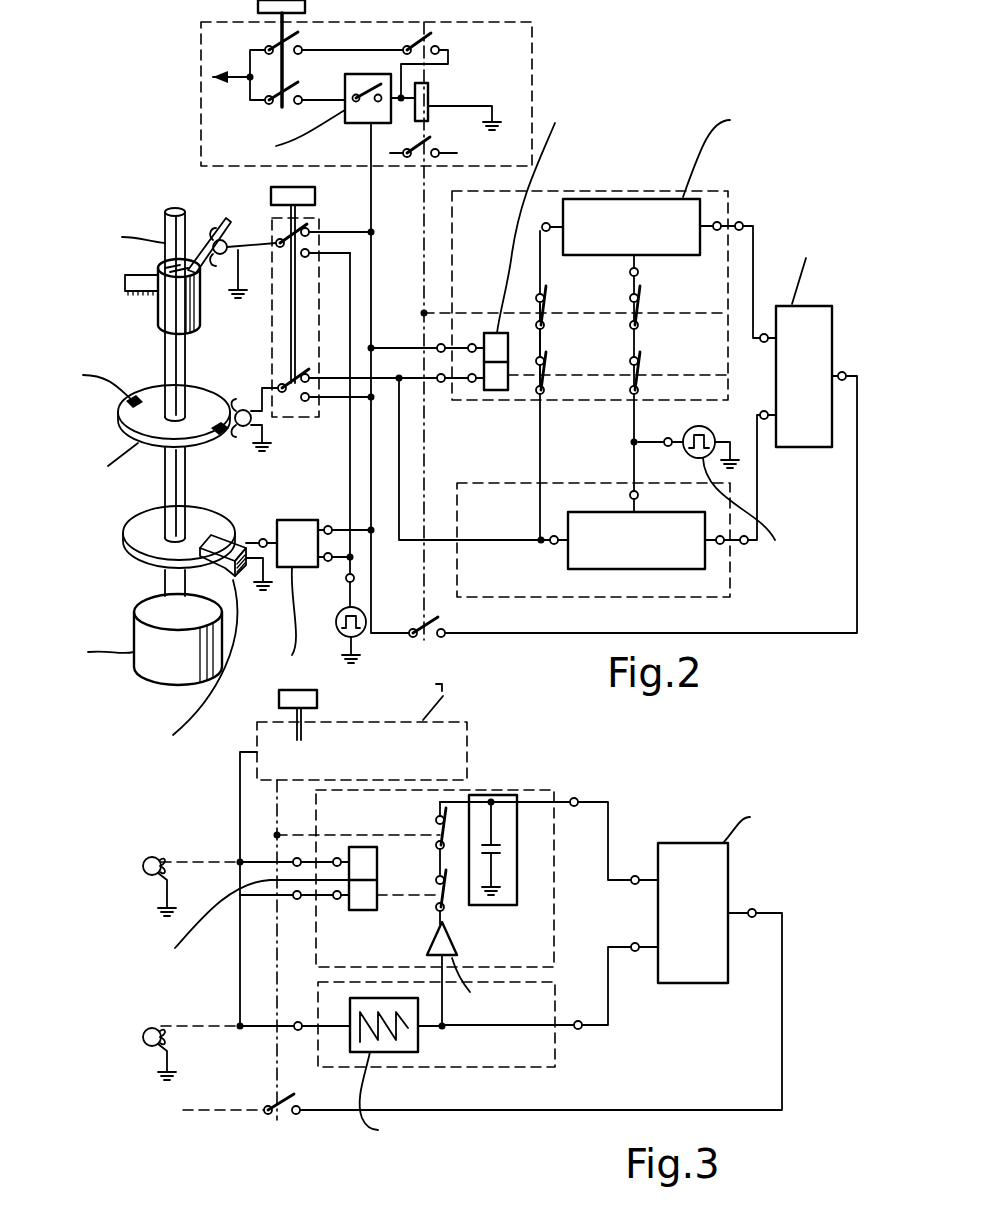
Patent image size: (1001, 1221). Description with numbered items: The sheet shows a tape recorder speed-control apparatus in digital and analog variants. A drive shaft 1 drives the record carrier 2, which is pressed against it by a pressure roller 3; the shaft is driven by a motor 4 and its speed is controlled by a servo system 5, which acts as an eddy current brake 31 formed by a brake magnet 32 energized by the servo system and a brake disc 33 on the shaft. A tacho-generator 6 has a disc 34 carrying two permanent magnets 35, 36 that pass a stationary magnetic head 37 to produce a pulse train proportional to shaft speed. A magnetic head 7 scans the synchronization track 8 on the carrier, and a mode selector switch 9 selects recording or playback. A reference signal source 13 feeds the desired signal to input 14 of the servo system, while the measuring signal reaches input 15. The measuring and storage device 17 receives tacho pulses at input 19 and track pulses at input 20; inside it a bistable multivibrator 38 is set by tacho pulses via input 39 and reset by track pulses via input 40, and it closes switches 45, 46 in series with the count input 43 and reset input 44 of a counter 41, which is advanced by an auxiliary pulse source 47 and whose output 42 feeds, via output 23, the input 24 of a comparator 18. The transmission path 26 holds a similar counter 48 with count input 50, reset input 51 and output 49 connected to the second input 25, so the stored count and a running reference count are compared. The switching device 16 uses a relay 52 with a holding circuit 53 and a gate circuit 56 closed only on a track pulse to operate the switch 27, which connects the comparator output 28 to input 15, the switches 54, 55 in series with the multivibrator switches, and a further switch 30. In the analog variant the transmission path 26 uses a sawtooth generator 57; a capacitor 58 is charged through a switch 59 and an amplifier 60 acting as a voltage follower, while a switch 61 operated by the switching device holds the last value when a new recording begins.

In FIG. 2, the drive shaft 1 is at (168, 242).
In FIG. 2, the record carrier 2 is at (208, 232).
In FIG. 2, the pressure roller 3 is at (201, 305).
In FIG. 2, the motor 4 is at (163, 673).
In FIG. 2, the servo system 5 is at (300, 568).
In FIG. 2, the tacho-generator 6 is at (137, 457).
In FIG. 2, the magnetic head 7 is at (226, 251).
In FIG. 3, the magnetic head 7 is at (160, 857).
In FIG. 2, the synchronization track 8 is at (146, 293).
In FIG. 2, the mode selector switch 9 is at (262, 224).
In FIG. 2, the reference signal source 13 is at (362, 634).
In FIG. 2, the servo system input 14 is at (329, 562).
In FIG. 2, the servo system input 15 is at (329, 525).
In FIG. 2, the switching device 16 is at (540, 52).
In FIG. 3, the switching device 16 is at (480, 743).
In FIG. 2, the measuring and storage device 17 is at (679, 178).
In FIG. 3, the measuring and storage device 17 is at (545, 770).
In FIG. 2, the comparator 18 is at (805, 306).
In FIG. 3, the comparator 18 is at (702, 843).
In FIG. 2, the input of measuring and storage device 19 is at (441, 382).
In FIG. 3, the input of measuring and storage device 19 is at (297, 899).
In FIG. 2, the input of measuring and storage device 20 is at (441, 344).
In FIG. 3, the input of measuring and storage device 20 is at (297, 857).
In FIG. 2, the output of measuring and storage device 23 is at (741, 222).
In FIG. 3, the output of measuring and storage device 23 is at (574, 807).
In FIG. 2, the comparator input 24 is at (764, 333).
In FIG. 3, the comparator input 24 is at (635, 875).
In FIG. 2, the second comparator input 25 is at (766, 420).
In FIG. 3, the second comparator input 25 is at (636, 952).
In FIG. 2, the transmission path 26 is at (716, 606).
In FIG. 3, the transmission path 26 is at (572, 1056).
In FIG. 2, the switch 27 is at (432, 636).
In FIG. 3, the switch 27 is at (284, 1118).
In FIG. 2, the comparator output 28 is at (842, 370).
In FIG. 3, the comparator output 28 is at (752, 908).
In FIG. 2, the switch 30 is at (440, 145).
In FIG. 2, the eddy current brake 31 is at (231, 586).
In FIG. 2, the brake magnet 32 is at (240, 537).
In FIG. 2, the brake disc 33 is at (218, 519).
In FIG. 2, the disc 34 is at (205, 395).
In FIG. 2, the permanent magnet 35 is at (222, 432).
In FIG. 2, the permanent magnet 36 is at (133, 400).
In FIG. 2, the stationary magnetic head 37 is at (264, 431).
In FIG. 3, the stationary magnetic head 37 is at (158, 1028).
In FIG. 2, the bistable multivibrator 38 is at (499, 333).
In FIG. 3, the bistable multivibrator 38 is at (377, 900).
In FIG. 2, the input of bistable multivibrator 39 is at (472, 382).
In FIG. 3, the input of bistable multivibrator 39 is at (337, 899).
In FIG. 2, the input of bistable multivibrator 40 is at (472, 344).
In FIG. 3, the input of bistable multivibrator 40 is at (337, 857).
In FIG. 2, the counter 41 is at (641, 205).
In FIG. 2, the counter output 42 is at (718, 222).
In FIG. 2, the count input 43 is at (640, 273).
In FIG. 2, the reset input 44 is at (548, 222).
In FIG. 2, the switch 45 is at (640, 375).
In FIG. 2, the switch 46 is at (545, 375).
In FIG. 2, the auxiliary pulse source 47 is at (712, 430).
In FIG. 2, the counter 48 is at (625, 565).
In FIG. 2, the counter output 49 is at (720, 545).
In FIG. 2, the count input 50 is at (640, 495).
In FIG. 2, the reset input 51 is at (554, 545).
In FIG. 2, the relay 52 is at (430, 96).
In FIG. 2, the holding circuit 53 is at (336, 50).
In FIG. 2, the switch 54 is at (638, 313).
In FIG. 2, the switch 55 is at (543, 300).
In FIG. 2, the gate circuit 56 is at (352, 113).
In FIG. 3, the sawtooth generator 57 is at (418, 1040).
In FIG. 3, the capacitor 58 is at (508, 898).
In FIG. 3, the switch 59 is at (437, 892).
In FIG. 3, the amplifier 60 is at (456, 952).
In FIG. 3, the switch 61 is at (436, 838).